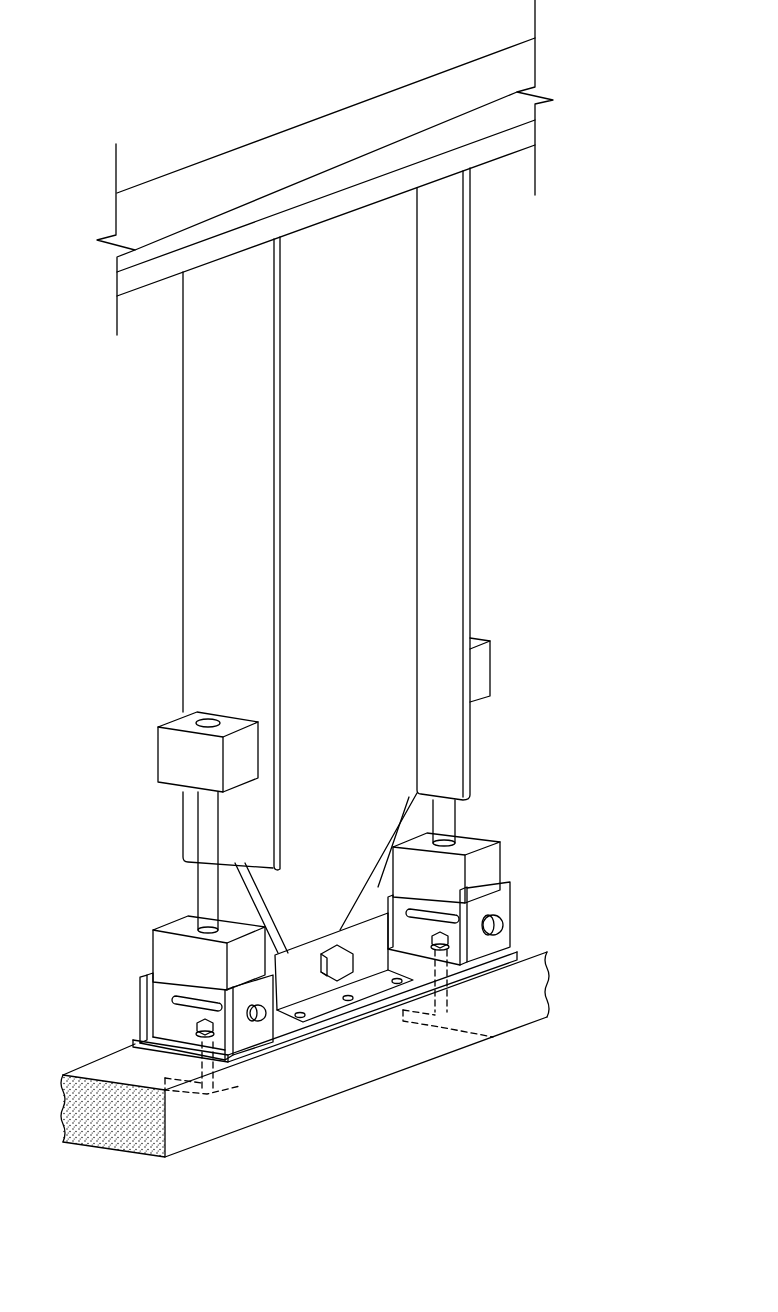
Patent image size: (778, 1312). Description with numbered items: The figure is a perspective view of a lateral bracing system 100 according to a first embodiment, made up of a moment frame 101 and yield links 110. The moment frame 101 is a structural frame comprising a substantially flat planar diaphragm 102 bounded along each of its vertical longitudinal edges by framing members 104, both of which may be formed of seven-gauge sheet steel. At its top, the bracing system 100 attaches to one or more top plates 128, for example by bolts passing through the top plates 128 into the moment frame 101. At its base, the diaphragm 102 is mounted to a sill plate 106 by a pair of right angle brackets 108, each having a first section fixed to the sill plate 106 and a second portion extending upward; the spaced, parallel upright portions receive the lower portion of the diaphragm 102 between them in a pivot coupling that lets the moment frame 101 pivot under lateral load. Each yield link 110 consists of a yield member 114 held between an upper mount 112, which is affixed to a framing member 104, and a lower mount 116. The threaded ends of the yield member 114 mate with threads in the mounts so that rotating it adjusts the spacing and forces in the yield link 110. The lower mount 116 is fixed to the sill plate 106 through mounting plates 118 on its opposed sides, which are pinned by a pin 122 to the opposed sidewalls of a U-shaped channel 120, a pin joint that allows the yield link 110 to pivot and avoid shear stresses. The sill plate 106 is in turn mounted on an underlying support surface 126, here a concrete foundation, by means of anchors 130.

The lateral bracing system 100 is at (120, 106).
The moment frame 101 is at (506, 325).
The diaphragm 102 is at (400, 345).
The framing members 104 is at (470, 480).
The sill plate 106 is at (283, 1047).
The right angle brackets 108 is at (303, 993).
The yield link 110 is at (540, 762).
The upper mount 112 is at (478, 668).
The yield member 114 is at (460, 812).
The lower mount 116 is at (168, 951).
The mounting plates 118 is at (493, 860).
The U-shaped channel 120 is at (503, 912).
The pin 122 is at (175, 1015).
The underlying support surface 126 is at (183, 1137).
The top plates 128 is at (484, 122).
The anchors 130 is at (240, 1090).